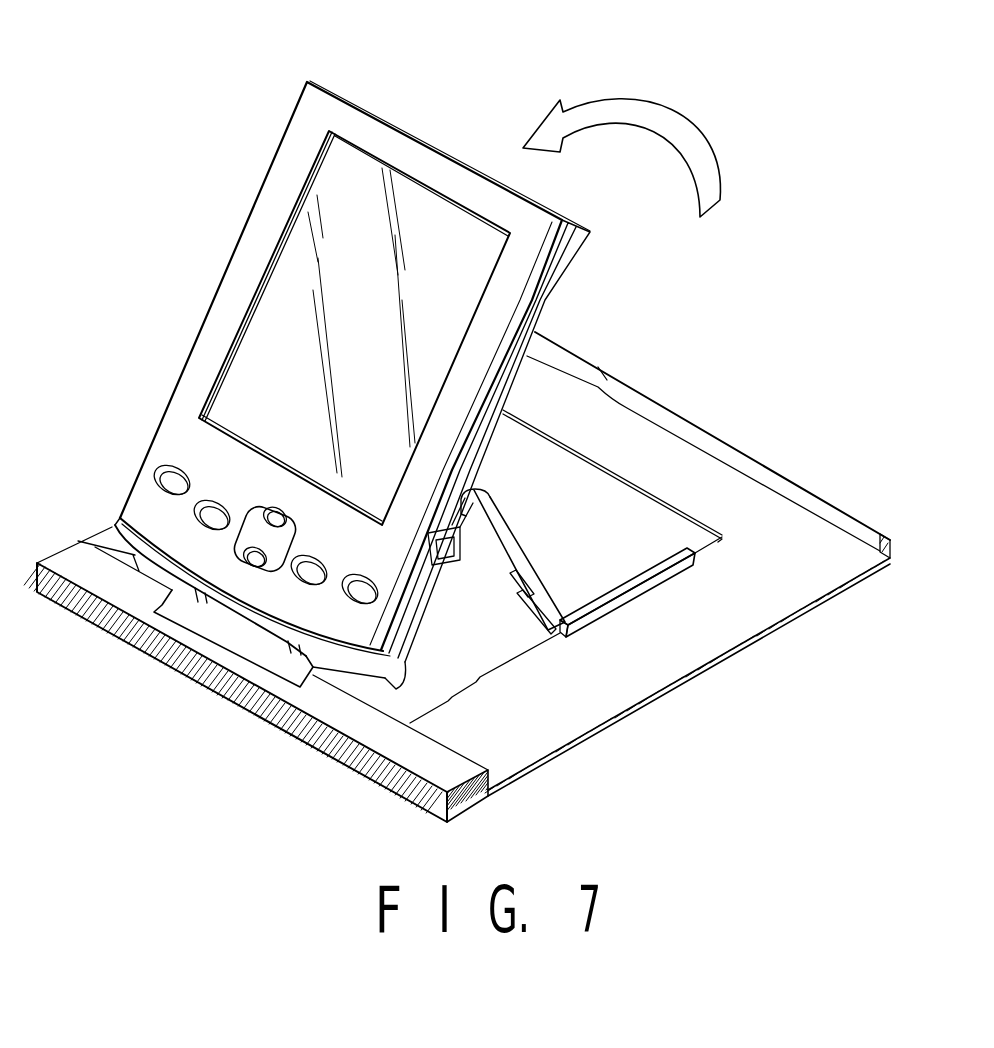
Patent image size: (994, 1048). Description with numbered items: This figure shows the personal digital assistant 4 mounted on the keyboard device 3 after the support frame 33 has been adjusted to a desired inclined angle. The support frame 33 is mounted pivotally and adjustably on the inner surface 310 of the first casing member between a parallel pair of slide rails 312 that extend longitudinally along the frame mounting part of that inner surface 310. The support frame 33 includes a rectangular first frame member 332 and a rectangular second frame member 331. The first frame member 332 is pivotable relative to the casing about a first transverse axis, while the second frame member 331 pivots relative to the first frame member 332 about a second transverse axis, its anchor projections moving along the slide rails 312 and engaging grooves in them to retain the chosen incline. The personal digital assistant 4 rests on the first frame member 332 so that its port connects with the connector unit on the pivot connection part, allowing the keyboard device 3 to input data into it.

The personal digital assistant 4 is at (307, 147).
The keyboard device 3 is at (778, 361).
The support frame 33 is at (593, 467).
The second frame member 331 is at (502, 543).
The first frame member 332 is at (403, 665).
The inner surface 310 is at (792, 550).
The slide rails 312 is at (622, 603).